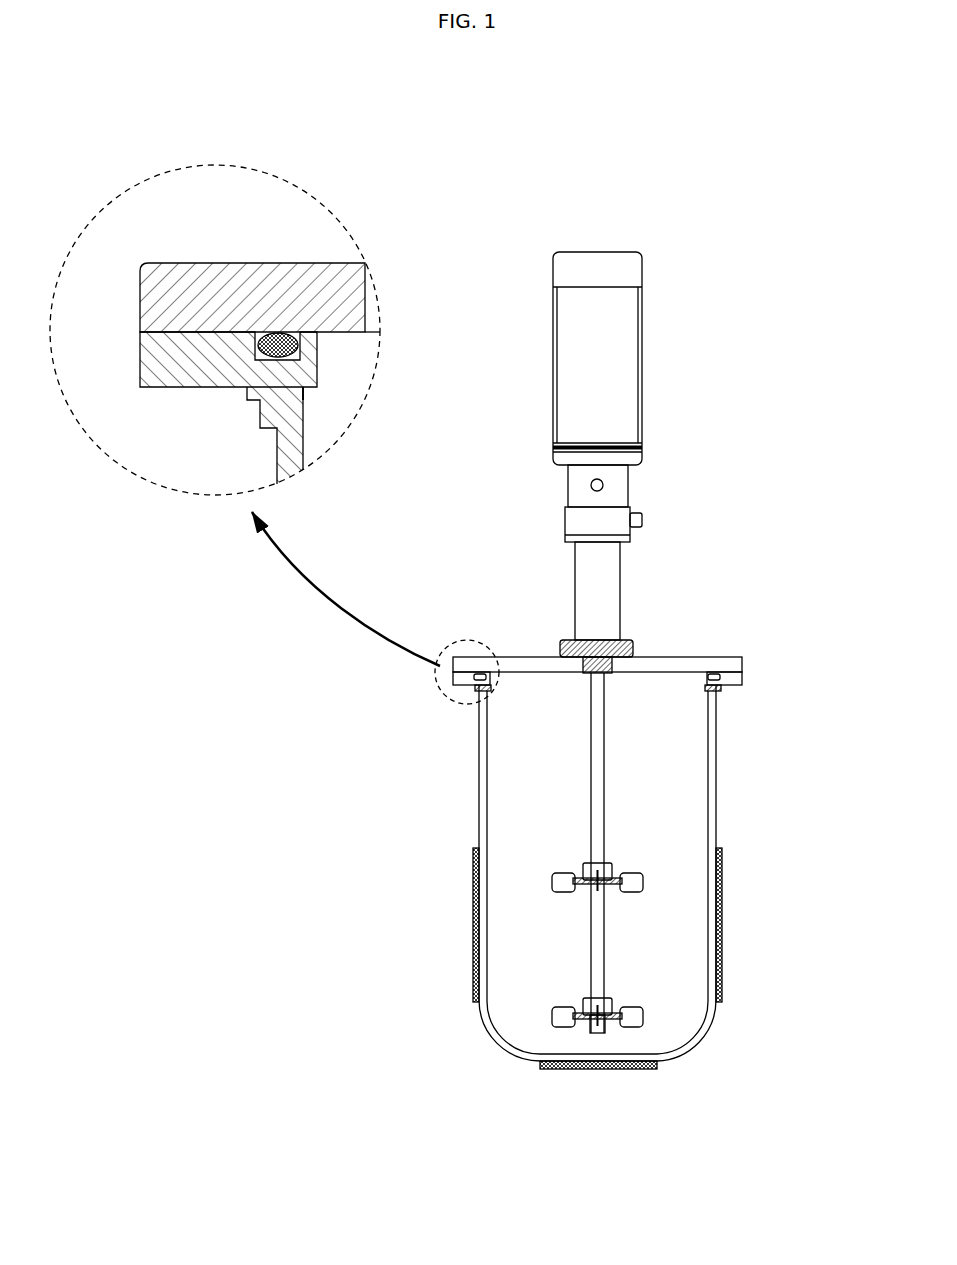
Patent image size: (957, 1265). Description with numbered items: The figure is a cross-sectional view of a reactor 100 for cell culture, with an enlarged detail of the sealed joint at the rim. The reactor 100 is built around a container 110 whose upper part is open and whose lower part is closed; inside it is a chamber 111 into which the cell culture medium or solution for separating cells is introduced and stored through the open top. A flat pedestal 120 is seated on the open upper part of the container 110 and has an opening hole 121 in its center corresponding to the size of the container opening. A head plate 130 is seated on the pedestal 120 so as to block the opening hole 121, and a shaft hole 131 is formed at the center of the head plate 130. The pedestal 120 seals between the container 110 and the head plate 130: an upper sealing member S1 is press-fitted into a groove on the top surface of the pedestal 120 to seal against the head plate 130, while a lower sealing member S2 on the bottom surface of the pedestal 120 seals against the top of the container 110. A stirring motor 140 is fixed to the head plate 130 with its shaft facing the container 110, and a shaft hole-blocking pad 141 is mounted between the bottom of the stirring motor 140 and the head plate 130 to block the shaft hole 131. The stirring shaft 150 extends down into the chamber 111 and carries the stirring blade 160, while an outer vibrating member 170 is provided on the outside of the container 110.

The reactor 100 is at (690, 182).
The container 110 is at (717, 760).
The chamber 111 is at (530, 762).
The pedestal 120 is at (743, 680).
The opening hole 121 is at (698, 668).
The head plate 130 is at (745, 660).
The shaft hole 131 is at (604, 690).
The stirring motor 140 is at (642, 372).
The shaft hole-blocking pad 141 is at (598, 643).
The stirring shaft 150 is at (606, 806).
The stirring blade 160 is at (644, 1019).
The outer vibrating member 170 is at (655, 1069).
The upper sealing member S1 is at (266, 332).
The lower sealing member S2 is at (304, 388).